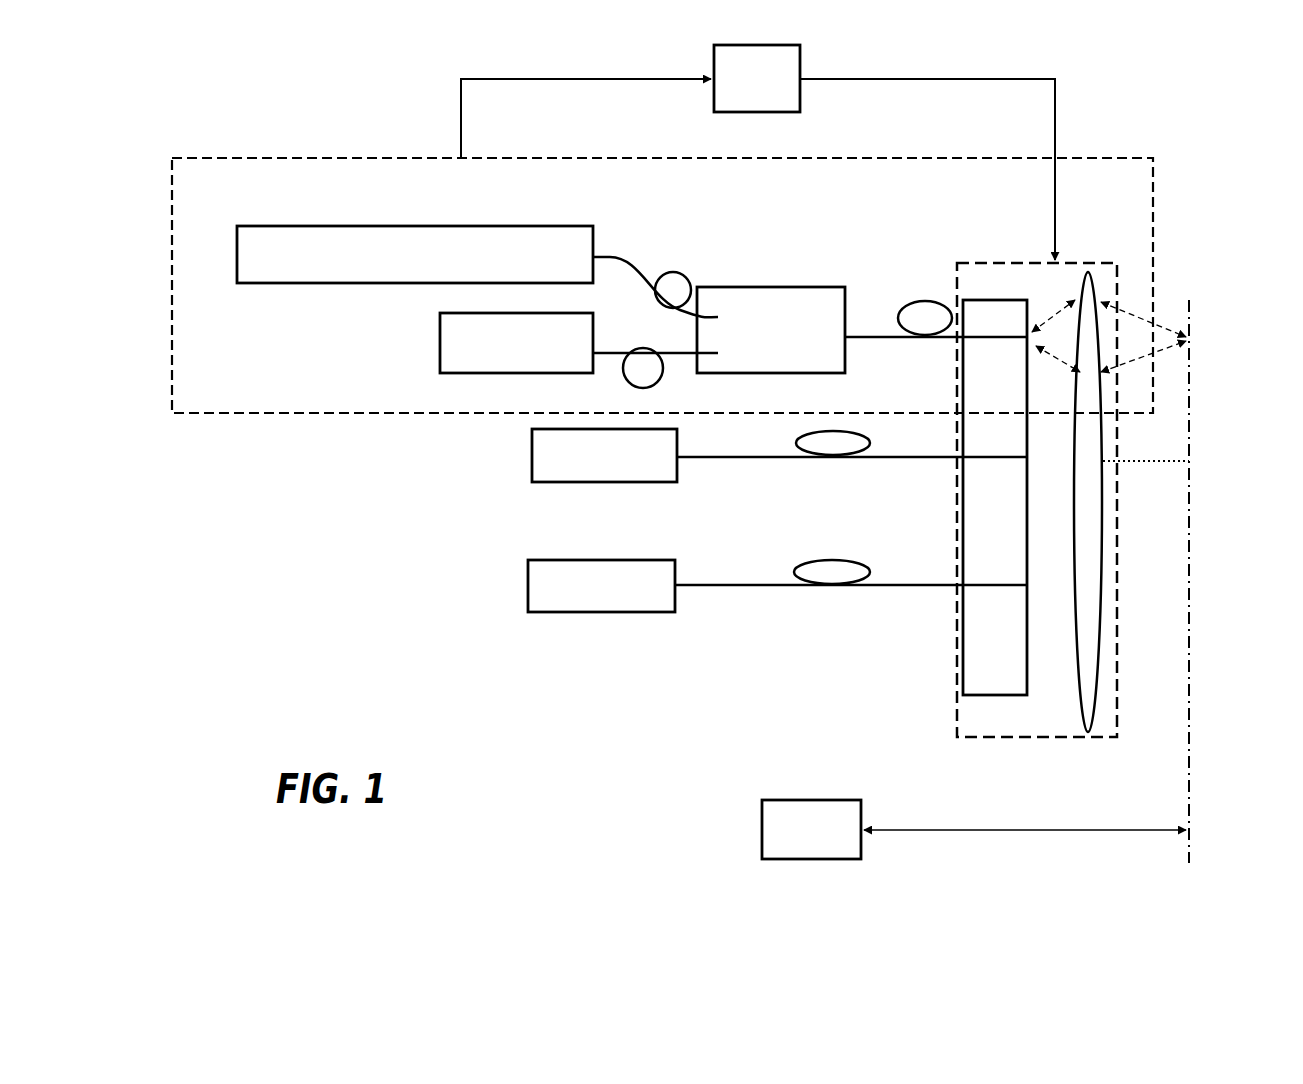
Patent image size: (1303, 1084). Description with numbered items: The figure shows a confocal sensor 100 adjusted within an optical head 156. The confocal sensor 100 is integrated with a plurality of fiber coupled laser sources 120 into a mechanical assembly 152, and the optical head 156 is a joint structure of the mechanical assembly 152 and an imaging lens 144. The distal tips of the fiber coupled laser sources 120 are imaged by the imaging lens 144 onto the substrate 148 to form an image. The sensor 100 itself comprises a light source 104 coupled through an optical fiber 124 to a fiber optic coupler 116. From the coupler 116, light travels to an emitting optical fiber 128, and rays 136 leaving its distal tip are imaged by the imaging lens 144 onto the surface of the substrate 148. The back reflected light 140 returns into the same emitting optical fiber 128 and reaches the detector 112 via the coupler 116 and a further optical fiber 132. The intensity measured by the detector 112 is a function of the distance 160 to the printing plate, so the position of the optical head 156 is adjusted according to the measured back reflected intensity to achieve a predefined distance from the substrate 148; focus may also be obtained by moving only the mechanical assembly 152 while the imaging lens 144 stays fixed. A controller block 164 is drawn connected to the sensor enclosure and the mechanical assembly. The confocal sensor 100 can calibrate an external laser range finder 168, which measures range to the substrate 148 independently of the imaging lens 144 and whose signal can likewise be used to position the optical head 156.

The confocal sensor 100 is at (194, 440).
The light source 104 is at (348, 226).
The detector 112 is at (440, 336).
The fiber optic coupler 116 is at (800, 285).
The fiber coupled laser source 120 is at (532, 449).
The optical fiber 124 is at (629, 258).
The optical fiber 128 is at (909, 301).
The optical fiber 132 is at (609, 352).
The rays 136 is at (1068, 306).
The back reflected light 140 is at (1162, 352).
The imaging lens 144 is at (1075, 668).
The substrate 148 is at (1192, 516).
The mechanical assembly 152 is at (1028, 657).
The optical head 156 is at (980, 737).
The distance 160 is at (1147, 463).
The controller 164 is at (758, 152).
The external laser range finder 168 is at (974, 829).